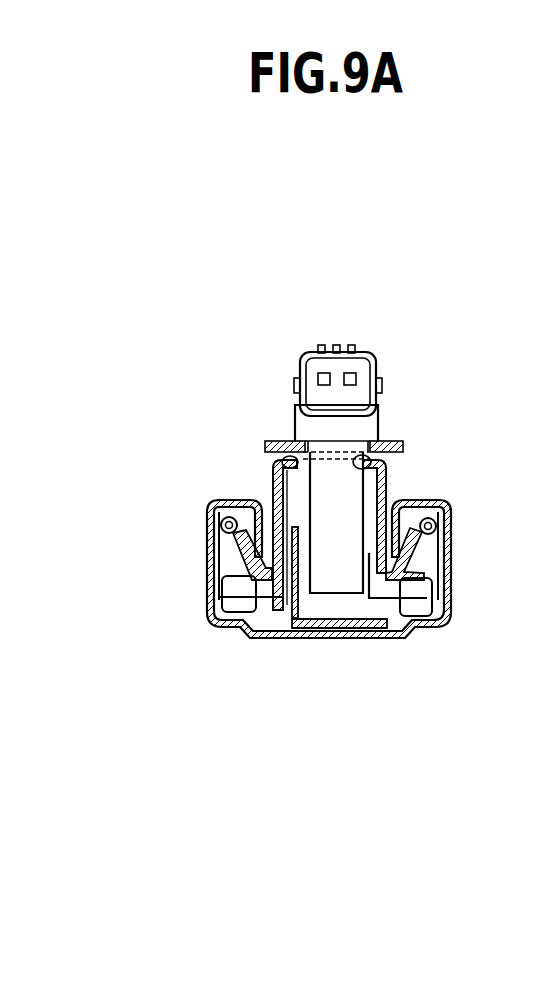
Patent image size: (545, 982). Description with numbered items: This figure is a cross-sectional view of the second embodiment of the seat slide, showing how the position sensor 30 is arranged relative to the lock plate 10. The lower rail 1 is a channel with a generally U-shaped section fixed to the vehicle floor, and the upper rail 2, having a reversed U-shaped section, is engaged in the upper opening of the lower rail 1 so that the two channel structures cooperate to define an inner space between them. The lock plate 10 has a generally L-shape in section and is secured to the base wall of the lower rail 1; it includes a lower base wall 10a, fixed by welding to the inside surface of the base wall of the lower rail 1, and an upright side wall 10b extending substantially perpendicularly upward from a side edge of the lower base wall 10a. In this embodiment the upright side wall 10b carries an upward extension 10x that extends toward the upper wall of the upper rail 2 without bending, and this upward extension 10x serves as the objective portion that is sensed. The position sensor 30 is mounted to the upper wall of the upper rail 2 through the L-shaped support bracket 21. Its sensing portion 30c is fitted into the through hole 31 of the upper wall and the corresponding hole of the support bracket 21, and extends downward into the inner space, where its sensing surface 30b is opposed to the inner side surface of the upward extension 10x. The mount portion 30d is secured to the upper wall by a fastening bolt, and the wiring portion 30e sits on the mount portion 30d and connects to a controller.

The position sensor 30 is at (288, 328).
The wiring portion 30e is at (357, 372).
The mount portion 30d is at (366, 428).
The support bracket 21 is at (266, 446).
The through hole 31 is at (378, 462).
The sensing surface 30b is at (276, 496).
The sensing portion 30c is at (338, 582).
The lower rail 1 is at (450, 578).
The upper rail 2 is at (385, 490).
The upward extension 10x is at (296, 538).
The lock plate 10 is at (289, 612).
The upright side wall 10b is at (299, 558).
The lower base wall 10a is at (372, 632).